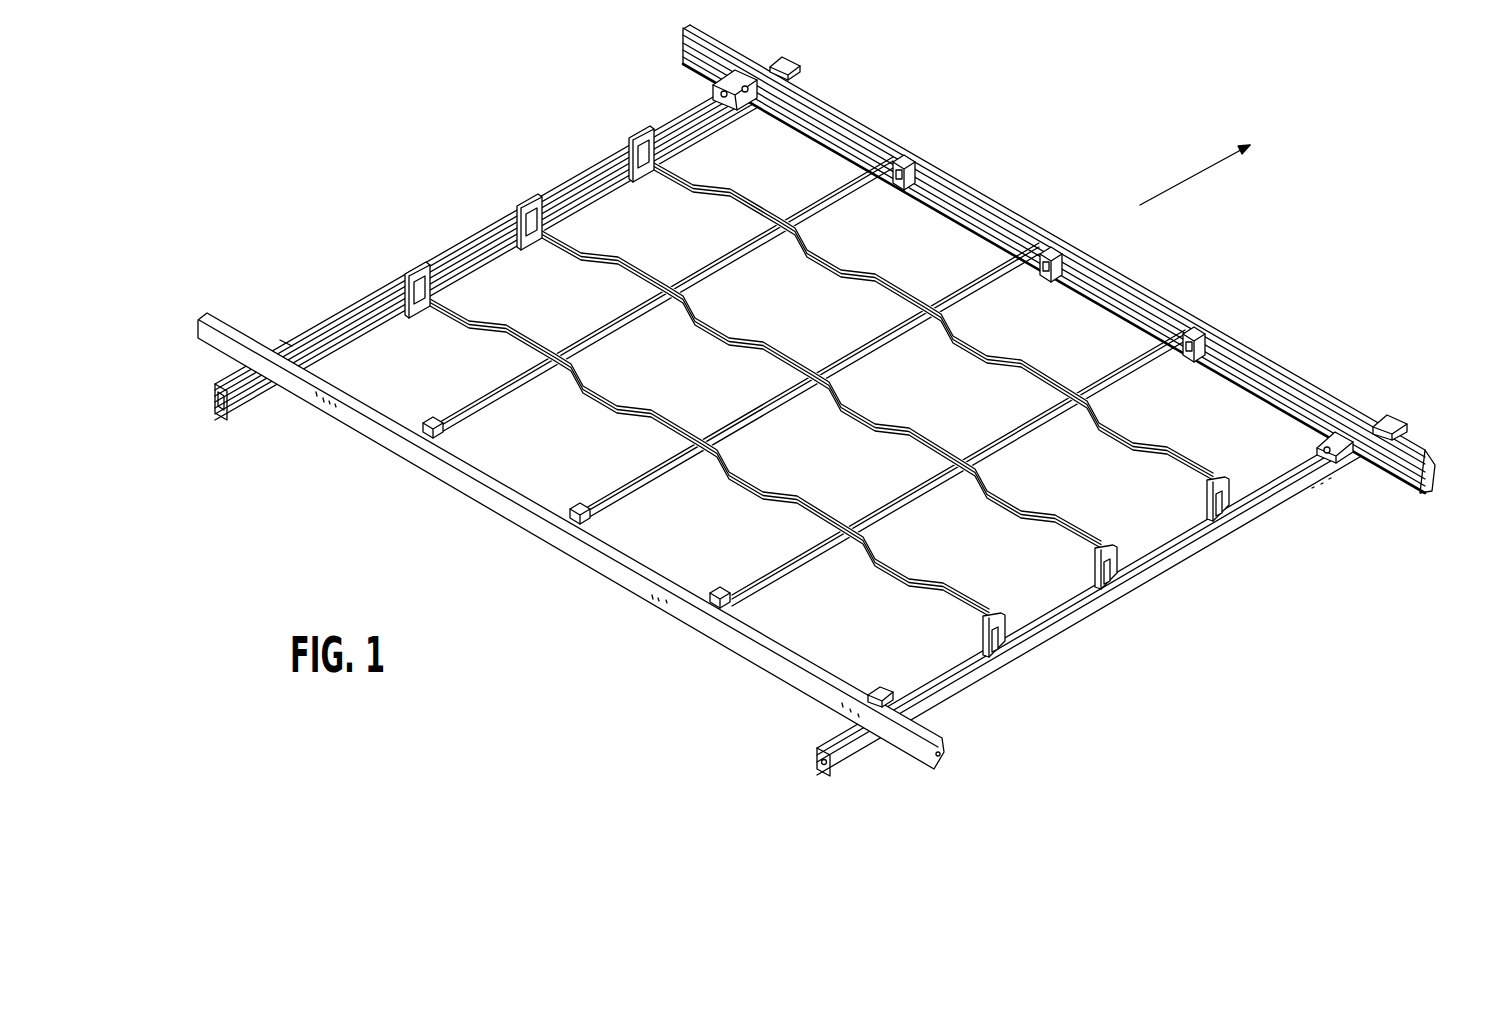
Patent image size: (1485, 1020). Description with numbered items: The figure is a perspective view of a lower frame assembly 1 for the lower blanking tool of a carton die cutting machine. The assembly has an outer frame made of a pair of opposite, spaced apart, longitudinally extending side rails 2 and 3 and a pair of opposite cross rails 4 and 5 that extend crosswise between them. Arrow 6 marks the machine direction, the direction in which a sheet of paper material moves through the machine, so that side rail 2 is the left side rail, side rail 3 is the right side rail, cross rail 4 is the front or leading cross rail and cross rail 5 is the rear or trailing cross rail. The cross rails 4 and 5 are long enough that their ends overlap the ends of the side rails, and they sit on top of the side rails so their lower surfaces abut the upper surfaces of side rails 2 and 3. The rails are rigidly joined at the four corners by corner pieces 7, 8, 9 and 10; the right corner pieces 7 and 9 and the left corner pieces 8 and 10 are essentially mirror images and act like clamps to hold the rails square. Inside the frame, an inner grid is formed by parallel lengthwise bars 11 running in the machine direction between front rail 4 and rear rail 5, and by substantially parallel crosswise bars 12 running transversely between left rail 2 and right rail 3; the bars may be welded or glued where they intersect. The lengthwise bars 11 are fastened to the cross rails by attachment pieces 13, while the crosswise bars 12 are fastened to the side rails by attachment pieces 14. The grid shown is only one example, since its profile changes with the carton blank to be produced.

The lower frame assembly 1 is at (411, 124).
The left side rail 2 is at (578, 180).
The right side rail 3 is at (1180, 572).
The front cross rail 4 is at (996, 196).
The rear cross rail 5 is at (616, 582).
The machine direction arrow 6 is at (1196, 172).
The right corner piece 7 is at (712, 85).
The left corner piece 8 is at (1345, 465).
The right corner piece 9 is at (880, 688).
The left corner piece 10 is at (285, 338).
The lengthwise bar 11 is at (766, 248).
The crosswise bar 12 is at (603, 390).
The attachment piece 13 is at (906, 156).
The attachment piece 14 is at (630, 140).